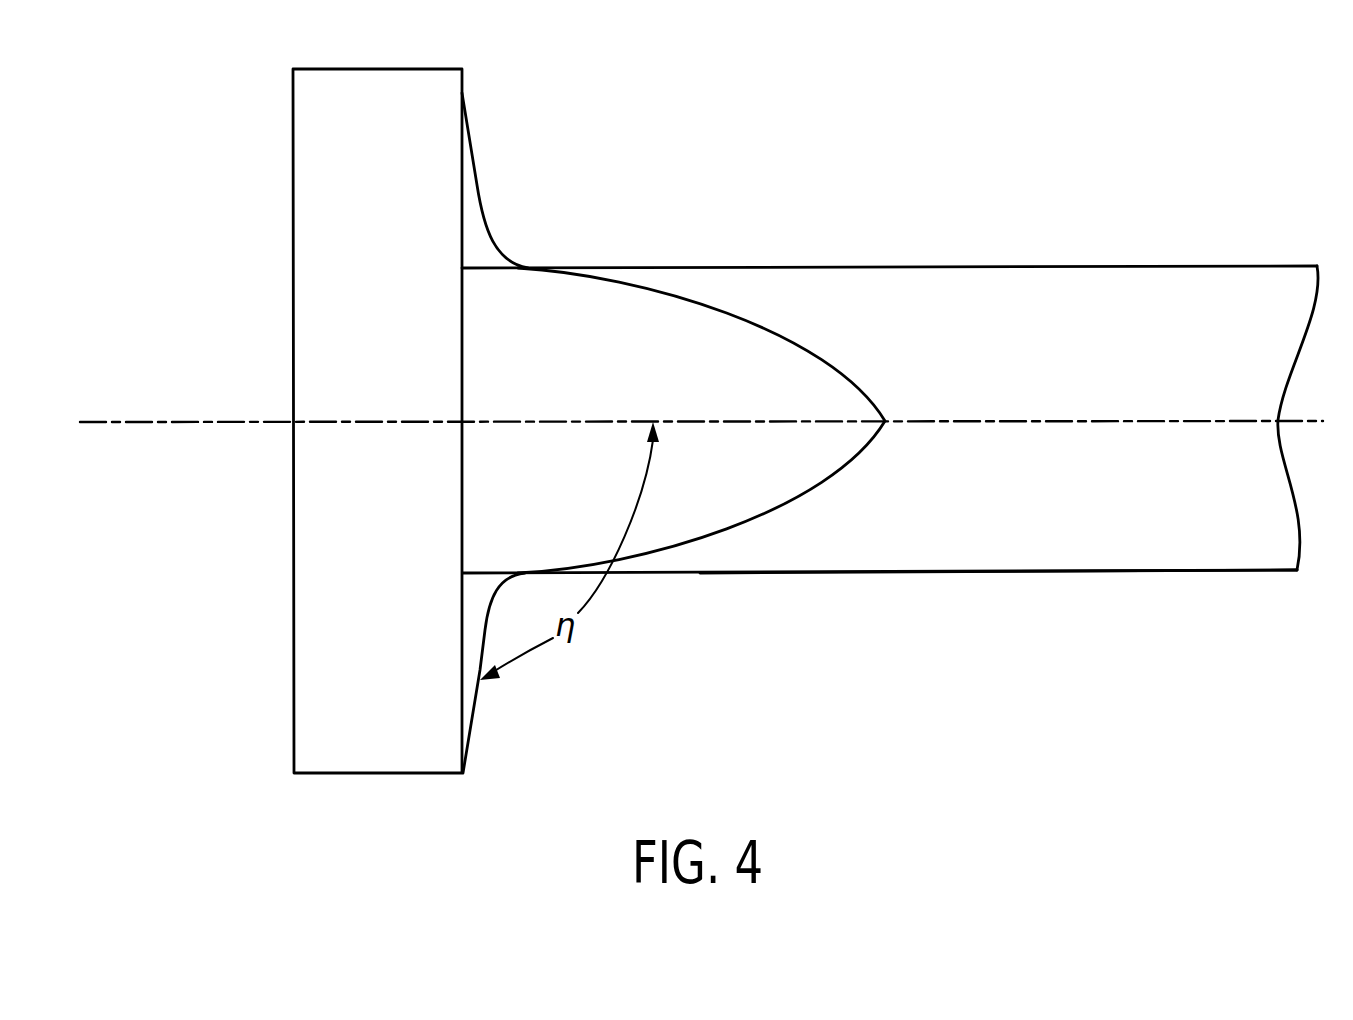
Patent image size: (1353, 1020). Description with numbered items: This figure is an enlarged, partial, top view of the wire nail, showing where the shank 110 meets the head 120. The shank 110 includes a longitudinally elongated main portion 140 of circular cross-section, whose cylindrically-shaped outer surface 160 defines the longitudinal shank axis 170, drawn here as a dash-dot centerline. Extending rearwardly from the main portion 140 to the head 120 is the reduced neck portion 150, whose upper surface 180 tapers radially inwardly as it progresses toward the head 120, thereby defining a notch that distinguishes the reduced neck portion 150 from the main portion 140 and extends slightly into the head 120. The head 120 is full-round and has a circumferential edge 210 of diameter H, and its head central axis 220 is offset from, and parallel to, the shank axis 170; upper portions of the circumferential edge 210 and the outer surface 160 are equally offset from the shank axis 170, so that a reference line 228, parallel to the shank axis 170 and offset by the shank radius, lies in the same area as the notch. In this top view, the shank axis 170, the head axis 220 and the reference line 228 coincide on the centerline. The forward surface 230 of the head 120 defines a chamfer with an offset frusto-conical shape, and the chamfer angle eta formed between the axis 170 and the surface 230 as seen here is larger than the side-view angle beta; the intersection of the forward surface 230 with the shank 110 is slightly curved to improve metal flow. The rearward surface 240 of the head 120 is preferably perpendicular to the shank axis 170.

The shank 110 is at (914, 228).
The head 120 is at (270, 687).
The main portion 140 is at (1093, 533).
The reduced neck portion 150 is at (688, 500).
The outer surface 160 is at (1022, 517).
The shank axis 170 is at (692, 471).
The upper surface 180 is at (560, 505).
The circumferential edge 210 is at (402, 528).
The head central axis 220 is at (692, 471).
The reference line 228 is at (183, 423).
The forward surface 230 is at (473, 710).
The rearward surface 240 is at (292, 263).